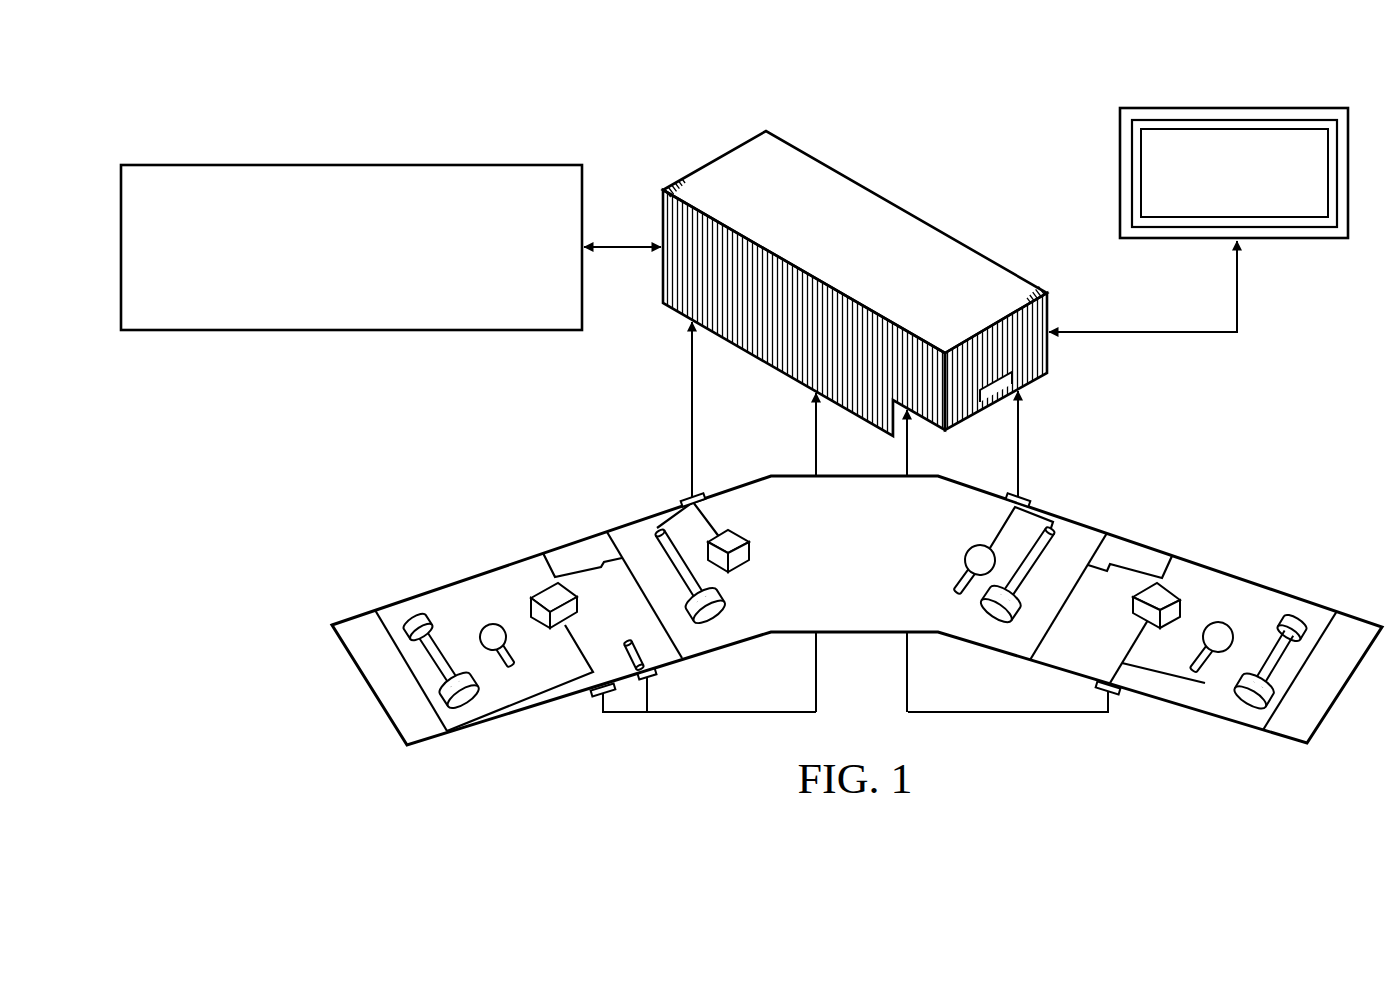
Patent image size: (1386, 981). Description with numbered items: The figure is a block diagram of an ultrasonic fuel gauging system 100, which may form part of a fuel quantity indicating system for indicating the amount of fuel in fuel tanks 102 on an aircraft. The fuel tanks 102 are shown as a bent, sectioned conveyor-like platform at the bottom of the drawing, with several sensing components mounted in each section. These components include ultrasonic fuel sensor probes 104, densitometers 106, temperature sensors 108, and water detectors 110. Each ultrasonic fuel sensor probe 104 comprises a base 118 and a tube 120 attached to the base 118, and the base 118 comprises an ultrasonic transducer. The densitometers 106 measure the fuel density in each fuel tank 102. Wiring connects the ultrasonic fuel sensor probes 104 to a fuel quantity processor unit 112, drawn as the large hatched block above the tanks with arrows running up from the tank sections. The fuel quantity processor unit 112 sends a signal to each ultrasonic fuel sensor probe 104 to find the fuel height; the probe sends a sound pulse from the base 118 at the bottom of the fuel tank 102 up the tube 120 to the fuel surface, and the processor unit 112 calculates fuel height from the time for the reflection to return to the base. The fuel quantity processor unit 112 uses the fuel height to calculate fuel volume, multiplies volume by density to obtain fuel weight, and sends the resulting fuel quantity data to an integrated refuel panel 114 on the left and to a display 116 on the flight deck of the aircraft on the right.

The ultrasonic fuel gauging system 100 is at (967, 128).
The fuel tanks 102 is at (527, 700).
The ultrasonic fuel sensor probes 104 is at (411, 619).
The densitometers 106 is at (541, 582).
The temperature sensors 108 is at (651, 657).
The water detectors 110 is at (487, 617).
The fuel quantity processor unit 112 is at (725, 168).
The integrated refuel panel 114 is at (372, 264).
The display 116 is at (1273, 107).
The base 118 is at (467, 710).
The tube 120 is at (420, 657).